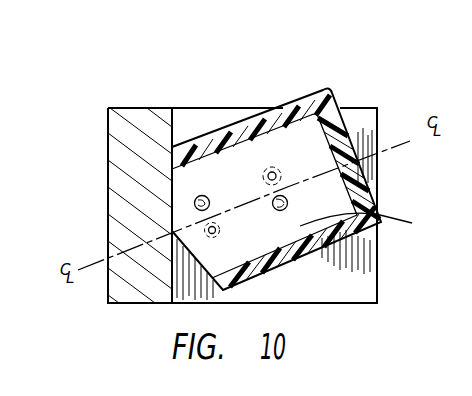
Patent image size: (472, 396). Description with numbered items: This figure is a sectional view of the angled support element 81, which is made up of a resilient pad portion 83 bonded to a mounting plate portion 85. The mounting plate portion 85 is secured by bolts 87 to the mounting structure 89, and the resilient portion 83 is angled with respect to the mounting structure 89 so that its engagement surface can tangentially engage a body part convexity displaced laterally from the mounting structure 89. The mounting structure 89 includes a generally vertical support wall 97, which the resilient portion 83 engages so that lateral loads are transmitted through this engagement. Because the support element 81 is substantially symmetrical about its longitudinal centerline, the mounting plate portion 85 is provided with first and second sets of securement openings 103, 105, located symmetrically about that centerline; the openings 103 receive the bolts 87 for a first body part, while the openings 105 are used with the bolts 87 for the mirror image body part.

The angled support element 81 is at (348, 240).
The resilient pad portion 83 is at (378, 196).
The mounting plate portion 85 is at (369, 227).
The mounting structure 89 is at (373, 110).
The support wall 97 is at (127, 128).
The first set of securement openings 103 is at (273, 201).
The second set of securement openings 105 is at (270, 170).
The bolts 87 is at (208, 210).